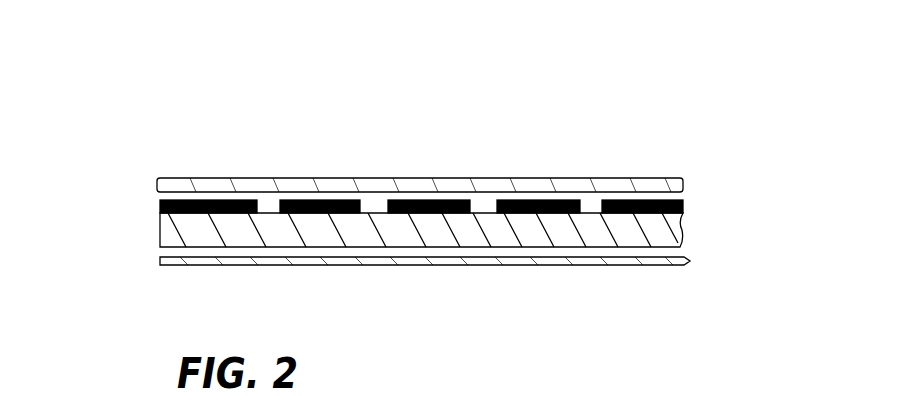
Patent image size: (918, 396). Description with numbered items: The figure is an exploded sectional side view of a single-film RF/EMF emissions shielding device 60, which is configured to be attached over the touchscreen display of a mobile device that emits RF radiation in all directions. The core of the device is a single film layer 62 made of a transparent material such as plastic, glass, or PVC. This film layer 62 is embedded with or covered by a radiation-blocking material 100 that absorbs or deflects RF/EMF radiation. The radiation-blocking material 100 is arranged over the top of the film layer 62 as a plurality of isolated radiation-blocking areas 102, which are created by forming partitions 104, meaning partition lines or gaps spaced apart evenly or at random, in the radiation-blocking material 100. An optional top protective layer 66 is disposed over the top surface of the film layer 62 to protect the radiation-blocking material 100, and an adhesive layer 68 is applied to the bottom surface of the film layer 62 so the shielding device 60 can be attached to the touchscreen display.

The RF/EMF emissions shielding device 60 is at (125, 119).
The single film layer 62 is at (133, 222).
The top protective layer 66 is at (658, 178).
The adhesive layer 68 is at (637, 267).
The radiation-blocking material 100 is at (683, 204).
The radiation-blocking areas 102 is at (300, 200).
The partitions 104 is at (376, 200).